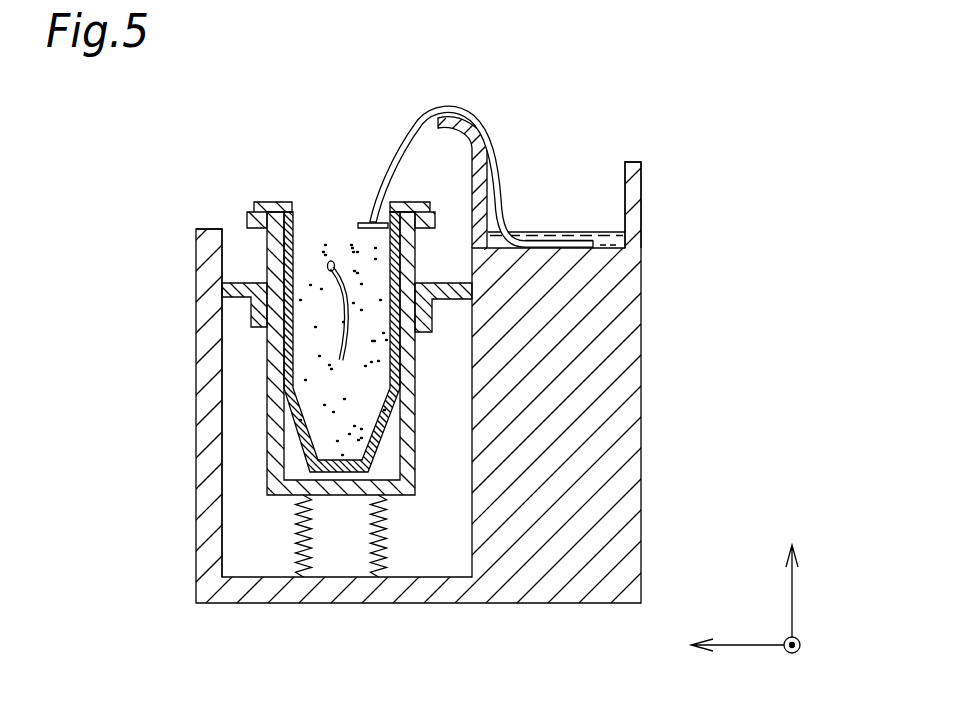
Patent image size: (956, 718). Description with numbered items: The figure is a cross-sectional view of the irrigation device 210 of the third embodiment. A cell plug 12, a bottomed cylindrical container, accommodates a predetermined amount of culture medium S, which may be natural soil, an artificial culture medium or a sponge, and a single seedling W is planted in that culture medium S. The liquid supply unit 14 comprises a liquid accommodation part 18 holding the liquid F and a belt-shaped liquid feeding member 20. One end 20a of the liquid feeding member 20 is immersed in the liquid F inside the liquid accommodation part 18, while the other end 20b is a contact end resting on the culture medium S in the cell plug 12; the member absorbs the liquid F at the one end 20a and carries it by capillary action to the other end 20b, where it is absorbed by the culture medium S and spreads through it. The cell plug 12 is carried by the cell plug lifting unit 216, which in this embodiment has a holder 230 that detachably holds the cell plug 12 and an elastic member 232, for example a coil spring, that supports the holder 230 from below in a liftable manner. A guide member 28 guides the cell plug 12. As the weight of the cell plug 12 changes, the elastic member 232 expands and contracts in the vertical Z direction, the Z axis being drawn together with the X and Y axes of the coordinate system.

The irrigation device 210 is at (727, 195).
The cell plug lifting unit 216 is at (214, 200).
The liquid accommodation part 18 is at (642, 205).
The liquid supply unit 14 is at (517, 143).
The liquid F is at (500, 240).
The holder 230 is at (398, 496).
The cell plug 12 is at (268, 204).
The guide member 28 is at (453, 300).
The elastic member 232 is at (370, 560).
The culture medium S is at (350, 446).
The seedling W is at (345, 310).
The liquid feeding member 20 is at (412, 121).
The one end 20a is at (582, 240).
The other end 20b is at (371, 222).
The Z-axis direction Z is at (783, 583).
The Y axis Y is at (735, 666).
The X axis X is at (798, 651).